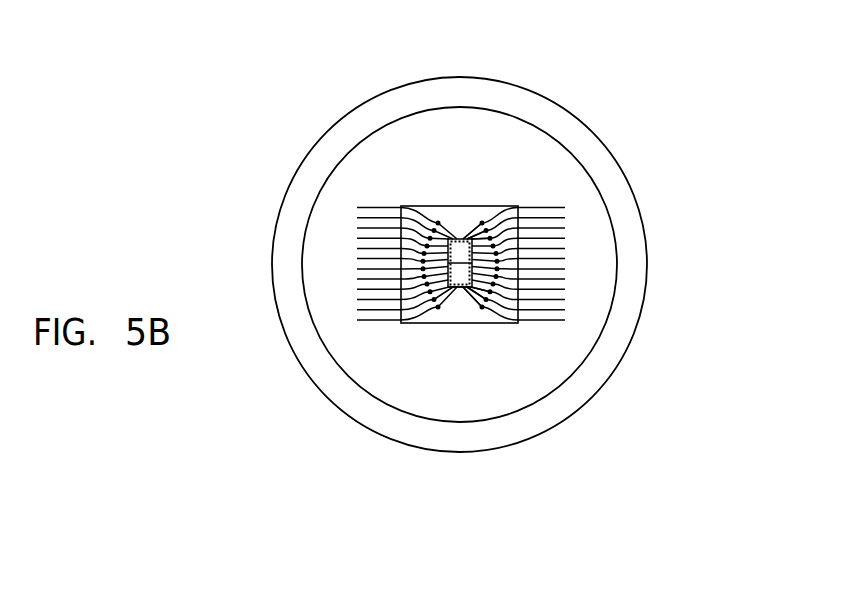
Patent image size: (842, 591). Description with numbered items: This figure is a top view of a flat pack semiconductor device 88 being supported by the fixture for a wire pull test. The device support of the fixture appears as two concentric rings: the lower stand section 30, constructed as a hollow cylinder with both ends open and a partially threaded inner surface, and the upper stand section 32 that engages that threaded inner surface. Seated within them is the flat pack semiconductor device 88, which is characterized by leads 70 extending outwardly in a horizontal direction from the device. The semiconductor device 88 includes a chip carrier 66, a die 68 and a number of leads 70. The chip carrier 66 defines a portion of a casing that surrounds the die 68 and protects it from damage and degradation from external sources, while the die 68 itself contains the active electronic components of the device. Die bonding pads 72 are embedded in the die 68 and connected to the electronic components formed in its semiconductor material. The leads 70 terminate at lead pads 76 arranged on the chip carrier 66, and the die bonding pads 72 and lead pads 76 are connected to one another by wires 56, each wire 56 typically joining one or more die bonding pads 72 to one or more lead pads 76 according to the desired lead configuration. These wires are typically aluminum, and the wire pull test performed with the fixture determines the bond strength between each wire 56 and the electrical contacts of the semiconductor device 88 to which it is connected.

The lower stand section 30 is at (277, 218).
The upper stand section 32 is at (353, 147).
The wire 56 is at (463, 325).
The chip carrier 66 is at (505, 205).
The die 68 is at (466, 296).
The leads 70 is at (383, 320).
The die bonding pads 72 is at (462, 238).
The lead pads 76 is at (437, 336).
The flat pack semiconductor device 88 is at (490, 184).